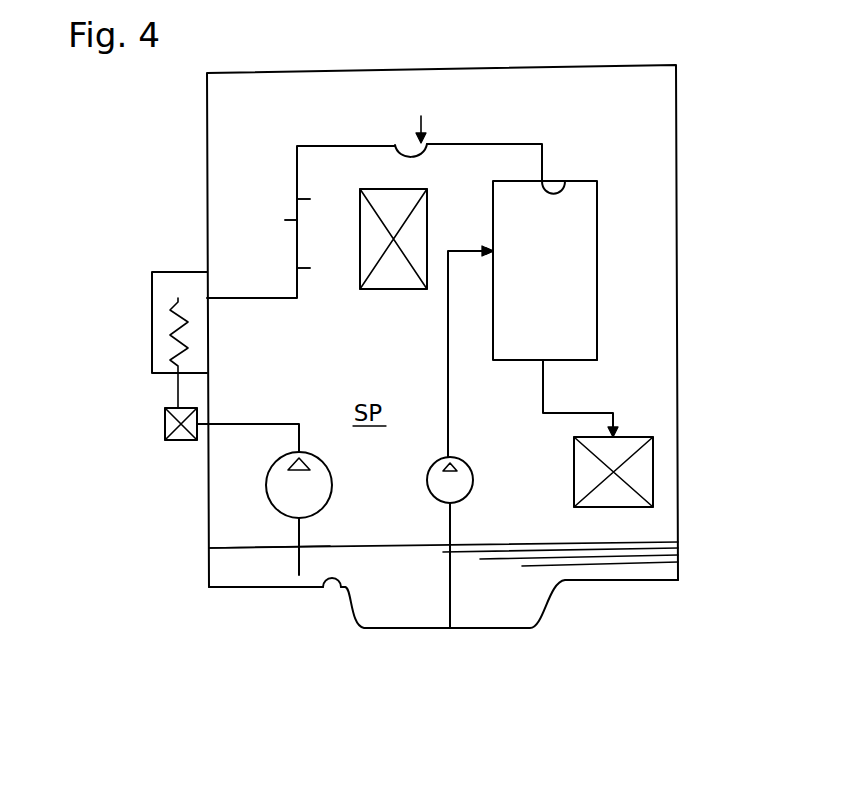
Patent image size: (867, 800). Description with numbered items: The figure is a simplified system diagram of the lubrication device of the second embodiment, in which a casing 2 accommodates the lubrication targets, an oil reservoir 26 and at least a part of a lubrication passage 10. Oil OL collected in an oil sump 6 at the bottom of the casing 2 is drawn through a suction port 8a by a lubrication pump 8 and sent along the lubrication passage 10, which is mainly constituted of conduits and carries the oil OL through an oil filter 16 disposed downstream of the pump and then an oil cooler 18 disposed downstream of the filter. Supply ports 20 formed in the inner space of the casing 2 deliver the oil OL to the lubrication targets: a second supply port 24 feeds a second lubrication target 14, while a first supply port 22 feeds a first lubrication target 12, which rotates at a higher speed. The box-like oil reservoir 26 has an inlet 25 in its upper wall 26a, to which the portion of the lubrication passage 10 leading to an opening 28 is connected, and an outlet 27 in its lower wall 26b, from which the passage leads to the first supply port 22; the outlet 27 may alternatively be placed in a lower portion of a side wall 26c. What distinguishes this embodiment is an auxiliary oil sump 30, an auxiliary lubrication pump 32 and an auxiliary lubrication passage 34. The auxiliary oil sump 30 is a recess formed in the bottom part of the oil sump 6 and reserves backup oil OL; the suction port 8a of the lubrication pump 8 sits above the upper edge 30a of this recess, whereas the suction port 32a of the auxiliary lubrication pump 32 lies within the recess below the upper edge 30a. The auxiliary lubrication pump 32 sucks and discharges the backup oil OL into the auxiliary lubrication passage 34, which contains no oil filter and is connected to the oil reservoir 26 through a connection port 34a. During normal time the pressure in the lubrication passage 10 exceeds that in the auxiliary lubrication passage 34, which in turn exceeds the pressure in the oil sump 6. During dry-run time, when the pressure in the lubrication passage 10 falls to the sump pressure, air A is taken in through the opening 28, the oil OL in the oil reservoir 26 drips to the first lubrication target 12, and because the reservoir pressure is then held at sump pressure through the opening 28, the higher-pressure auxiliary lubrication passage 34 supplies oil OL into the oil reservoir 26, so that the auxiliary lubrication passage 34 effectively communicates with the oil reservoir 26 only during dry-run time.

The casing 2 is at (676, 98).
The oil sump 6 is at (230, 568).
The lubrication pump 8 is at (332, 489).
The suction port 8a is at (293, 576).
The lubrication passage 10 is at (517, 143).
The first lubrication target 12 is at (643, 470).
The second lubrication target 14 is at (393, 289).
The oil filter 16 is at (174, 442).
The oil cooler 18 is at (165, 338).
The supply ports 20 is at (219, 220).
The first supply port 22 is at (614, 413).
The second supply port 24 is at (305, 199).
The inlet 25 is at (548, 186).
The oil reservoir 26 is at (590, 276).
The upper wall 26a is at (565, 181).
The lower wall 26b is at (572, 361).
The side wall 26c is at (597, 240).
The outlet 27 is at (543, 360).
The opening 28 is at (407, 152).
The auxiliary oil sump 30 is at (525, 606).
The upper edge 30a is at (323, 591).
The auxiliary lubrication pump 32 is at (470, 494).
The suction port 32a is at (446, 630).
The auxiliary lubrication passage 34 is at (448, 368).
The connection port 34a is at (495, 251).
The air A is at (422, 124).
The oil OL is at (653, 562).